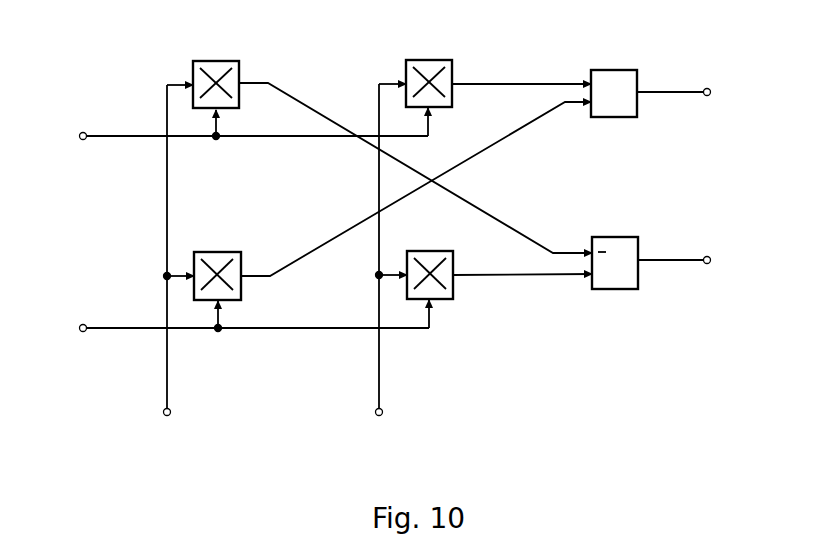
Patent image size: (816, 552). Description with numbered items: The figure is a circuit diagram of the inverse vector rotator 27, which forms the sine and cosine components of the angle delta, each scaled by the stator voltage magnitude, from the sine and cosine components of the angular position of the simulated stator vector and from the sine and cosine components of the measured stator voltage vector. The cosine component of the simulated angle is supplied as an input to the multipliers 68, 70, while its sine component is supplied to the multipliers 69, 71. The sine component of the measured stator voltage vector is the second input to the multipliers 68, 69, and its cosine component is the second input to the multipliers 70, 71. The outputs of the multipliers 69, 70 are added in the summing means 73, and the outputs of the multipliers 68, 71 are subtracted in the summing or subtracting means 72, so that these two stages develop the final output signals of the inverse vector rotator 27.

The inverse vector rotator 27 is at (409, 240).
The multiplier 68 is at (216, 64).
The multiplier 69 is at (216, 262).
The multiplier 70 is at (430, 63).
The multiplier 71 is at (430, 263).
The subtracting means 72 is at (617, 251).
The summing means 73 is at (616, 80).